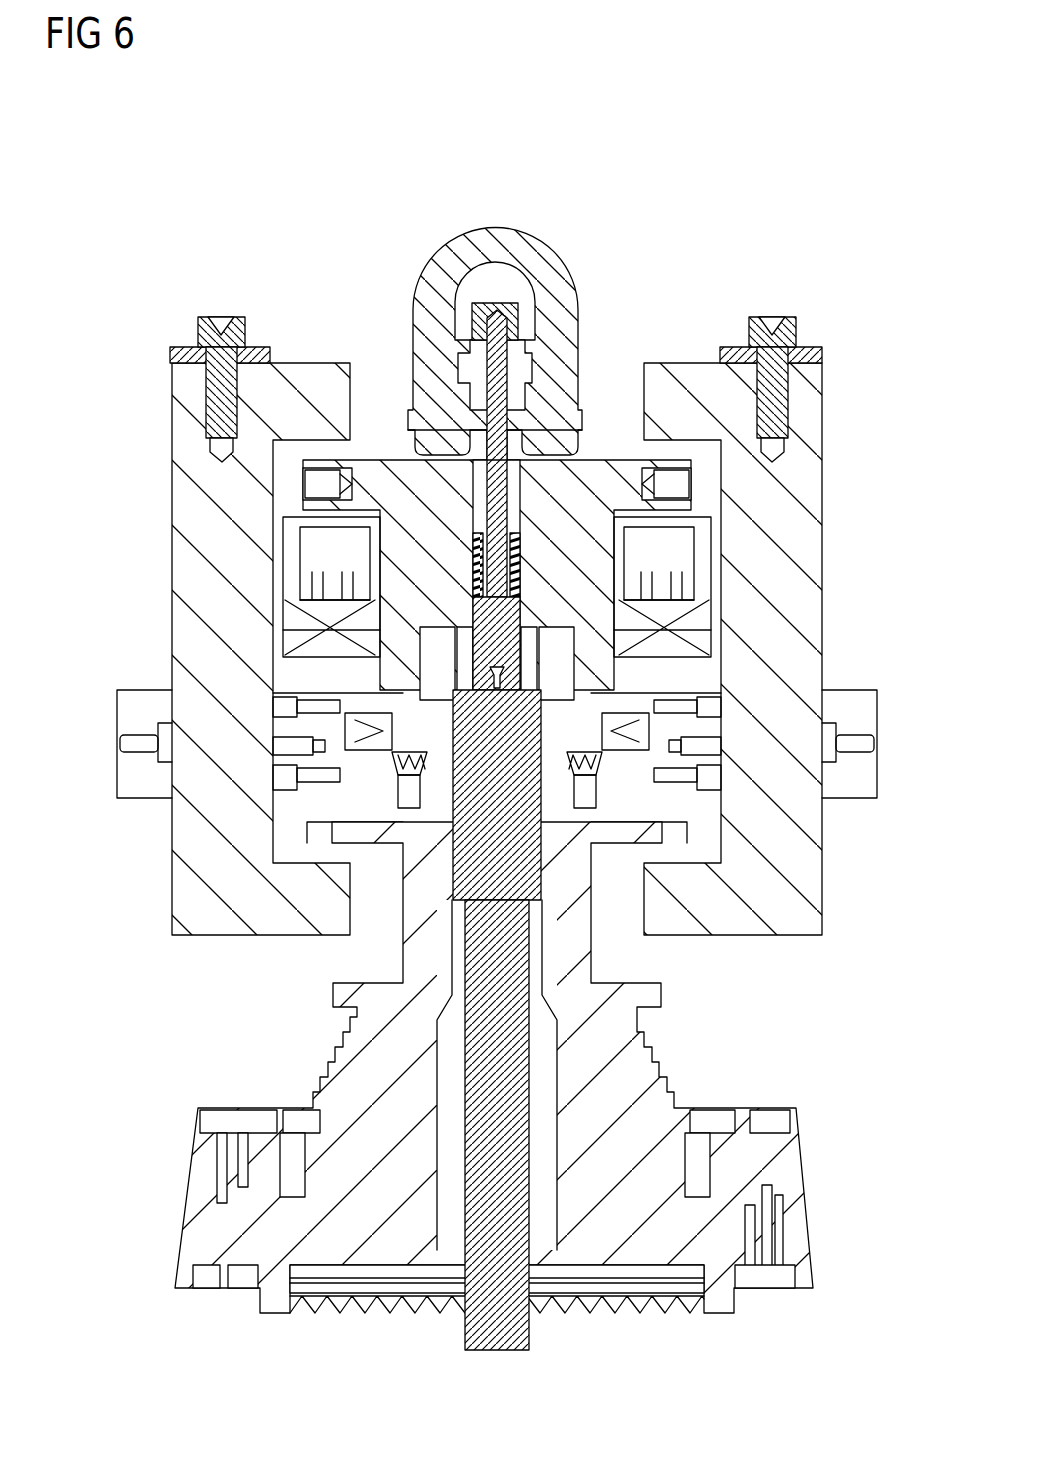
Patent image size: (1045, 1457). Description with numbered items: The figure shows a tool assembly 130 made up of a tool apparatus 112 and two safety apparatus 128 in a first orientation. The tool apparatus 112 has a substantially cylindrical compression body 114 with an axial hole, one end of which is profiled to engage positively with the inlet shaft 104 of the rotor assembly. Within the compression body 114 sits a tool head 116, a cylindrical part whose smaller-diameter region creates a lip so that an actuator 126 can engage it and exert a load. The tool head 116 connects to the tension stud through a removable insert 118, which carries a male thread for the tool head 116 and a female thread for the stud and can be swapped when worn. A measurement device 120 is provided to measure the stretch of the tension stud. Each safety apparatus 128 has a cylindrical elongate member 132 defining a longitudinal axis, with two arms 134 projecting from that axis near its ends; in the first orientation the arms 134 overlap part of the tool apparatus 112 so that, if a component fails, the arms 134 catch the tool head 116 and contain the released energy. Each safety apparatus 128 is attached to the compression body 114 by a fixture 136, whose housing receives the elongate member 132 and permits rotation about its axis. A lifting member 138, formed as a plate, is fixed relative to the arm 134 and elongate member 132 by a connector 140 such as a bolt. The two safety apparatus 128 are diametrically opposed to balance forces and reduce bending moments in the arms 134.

The inlet shaft 104 is at (403, 952).
The tool apparatus 112 is at (396, 228).
The compression body 114 is at (690, 690).
The tool head 116 is at (305, 480).
The removable insert 118 is at (400, 680).
The measurement device 120 is at (523, 518).
The actuator 126 is at (712, 553).
The safety apparatus 128 is at (862, 383).
The tool assembly 130 is at (203, 152).
The elongate member 132 is at (822, 598).
The arm 134 is at (692, 362).
The fixture 136 is at (117, 716).
The lifting member 138 is at (172, 357).
The connector 140 is at (221, 317).